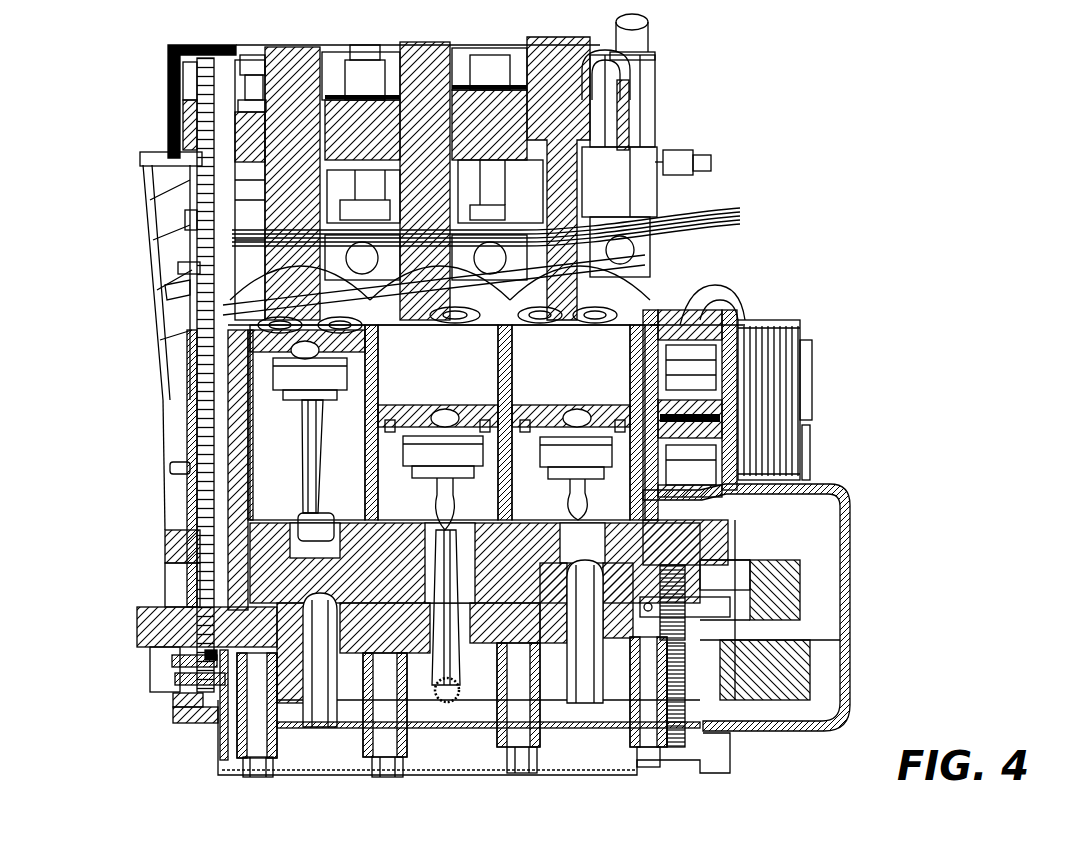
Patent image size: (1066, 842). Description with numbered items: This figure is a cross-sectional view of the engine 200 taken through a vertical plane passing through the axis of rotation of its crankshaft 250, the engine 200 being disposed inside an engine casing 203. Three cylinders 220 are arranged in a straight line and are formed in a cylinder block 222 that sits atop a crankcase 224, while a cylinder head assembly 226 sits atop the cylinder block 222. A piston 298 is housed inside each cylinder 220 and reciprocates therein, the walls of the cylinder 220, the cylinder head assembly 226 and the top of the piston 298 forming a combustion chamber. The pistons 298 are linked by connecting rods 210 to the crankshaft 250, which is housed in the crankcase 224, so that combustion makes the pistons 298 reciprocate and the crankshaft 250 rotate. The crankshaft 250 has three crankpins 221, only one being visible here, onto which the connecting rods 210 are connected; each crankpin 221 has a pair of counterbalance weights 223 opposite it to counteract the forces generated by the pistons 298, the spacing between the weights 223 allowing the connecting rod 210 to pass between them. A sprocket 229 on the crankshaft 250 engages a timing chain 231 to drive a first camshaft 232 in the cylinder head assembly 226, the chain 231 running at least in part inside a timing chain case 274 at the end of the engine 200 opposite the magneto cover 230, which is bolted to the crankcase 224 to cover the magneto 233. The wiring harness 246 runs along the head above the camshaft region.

The engine 200 is at (826, 239).
The engine casing 203 is at (200, 725).
The connecting rods 210 is at (322, 450).
The cylinders 220 is at (297, 437).
The crankpins 221 is at (437, 700).
The cylinder block 222 is at (720, 292).
The counterbalance weights 223 is at (293, 705).
The crankcase 224 is at (200, 543).
The cylinder head assembly 226 is at (633, 178).
The sprocket 229 is at (167, 655).
The magneto cover 230 is at (840, 510).
The timing chain 231 is at (205, 268).
The first camshaft 232 is at (590, 100).
The magneto 233 is at (840, 568).
The wiring harness 246 is at (511, 224).
The crankshaft 250 is at (258, 685).
The timing chain case 274 is at (195, 218).
The pistons 298 is at (250, 350).